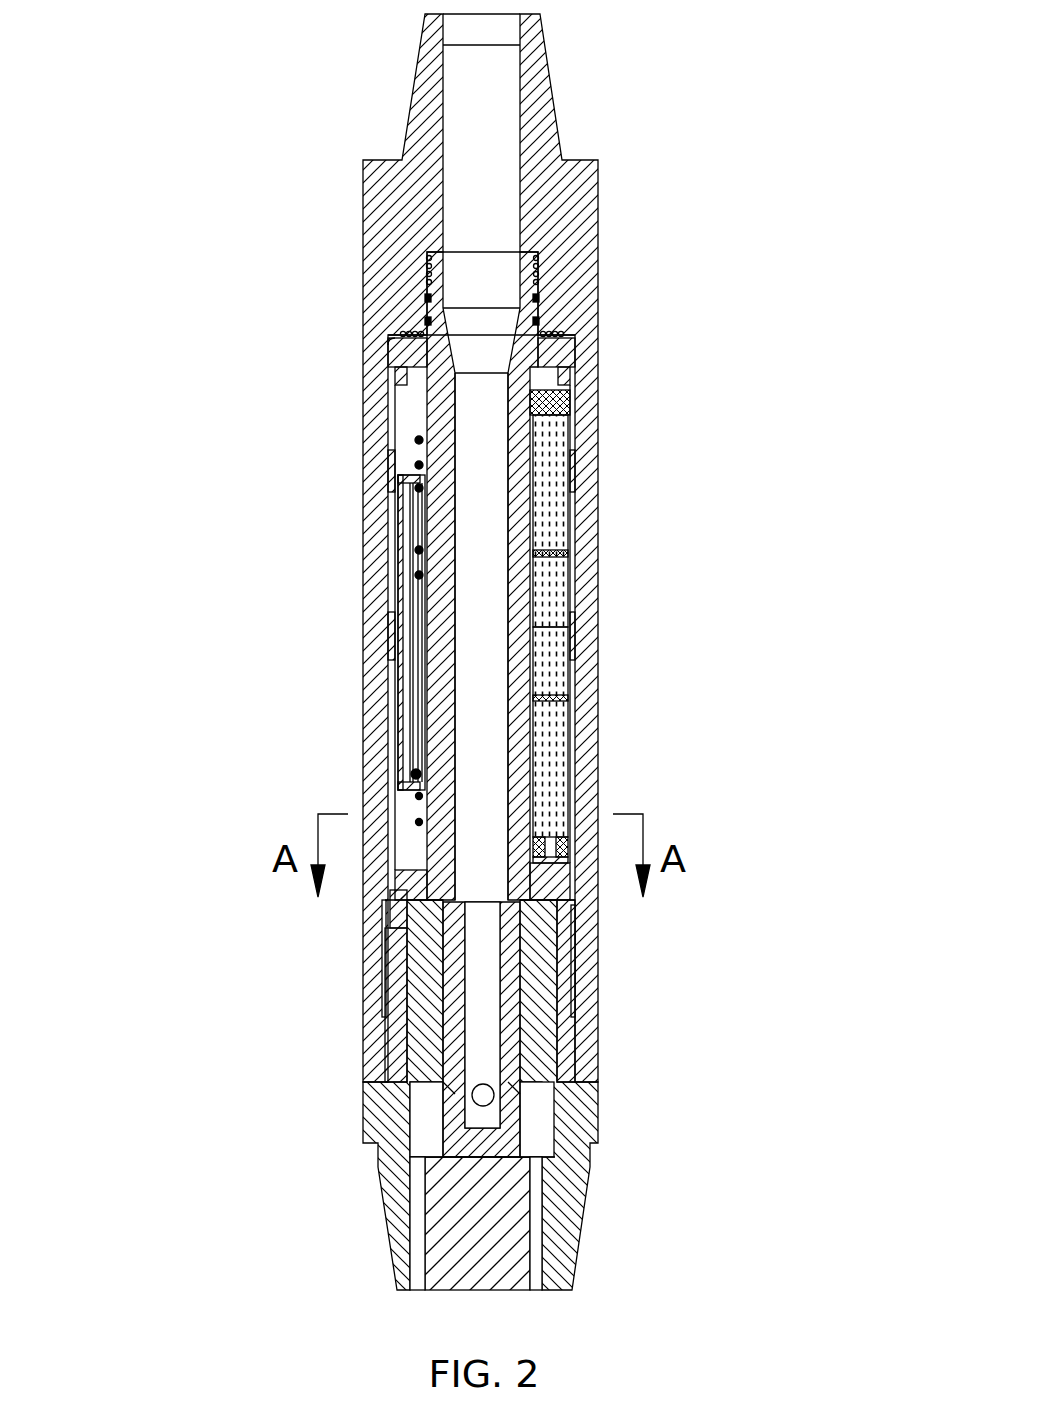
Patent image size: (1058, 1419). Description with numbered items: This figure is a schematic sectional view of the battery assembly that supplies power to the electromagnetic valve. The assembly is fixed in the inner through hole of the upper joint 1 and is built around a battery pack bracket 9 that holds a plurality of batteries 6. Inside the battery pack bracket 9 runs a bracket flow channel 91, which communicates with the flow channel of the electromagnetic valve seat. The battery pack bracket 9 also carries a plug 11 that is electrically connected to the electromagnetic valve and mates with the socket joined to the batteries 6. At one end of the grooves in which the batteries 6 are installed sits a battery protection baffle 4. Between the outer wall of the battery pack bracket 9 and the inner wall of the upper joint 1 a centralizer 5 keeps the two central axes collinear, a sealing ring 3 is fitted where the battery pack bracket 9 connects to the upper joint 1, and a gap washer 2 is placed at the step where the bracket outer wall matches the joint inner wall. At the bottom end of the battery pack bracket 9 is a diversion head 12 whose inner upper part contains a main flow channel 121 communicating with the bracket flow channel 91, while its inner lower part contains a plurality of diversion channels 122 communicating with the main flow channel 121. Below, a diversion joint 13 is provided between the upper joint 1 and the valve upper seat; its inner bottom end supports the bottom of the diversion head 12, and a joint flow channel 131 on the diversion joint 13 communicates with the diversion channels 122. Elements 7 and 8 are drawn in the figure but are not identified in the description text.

The upper joint 1 is at (420, 185).
The gap washer 2 is at (575, 345).
The sealing ring 3 is at (427, 278).
The battery protection baffle 4 is at (565, 400).
The centralizer 5 is at (395, 347).
The battery 6 is at (548, 495).
The circuit board 7 is at (405, 505).
The battery pack 8 is at (568, 633).
The battery pack bracket 9 is at (443, 670).
The bracket flow channel 91 is at (468, 720).
The plug 11 is at (390, 903).
The diversion head 12 is at (522, 1030).
The main flow channel 121 is at (487, 958).
The diversion channel 122 is at (512, 1098).
The diversion joint 13 is at (393, 1032).
The joint flow channel 131 is at (418, 1203).